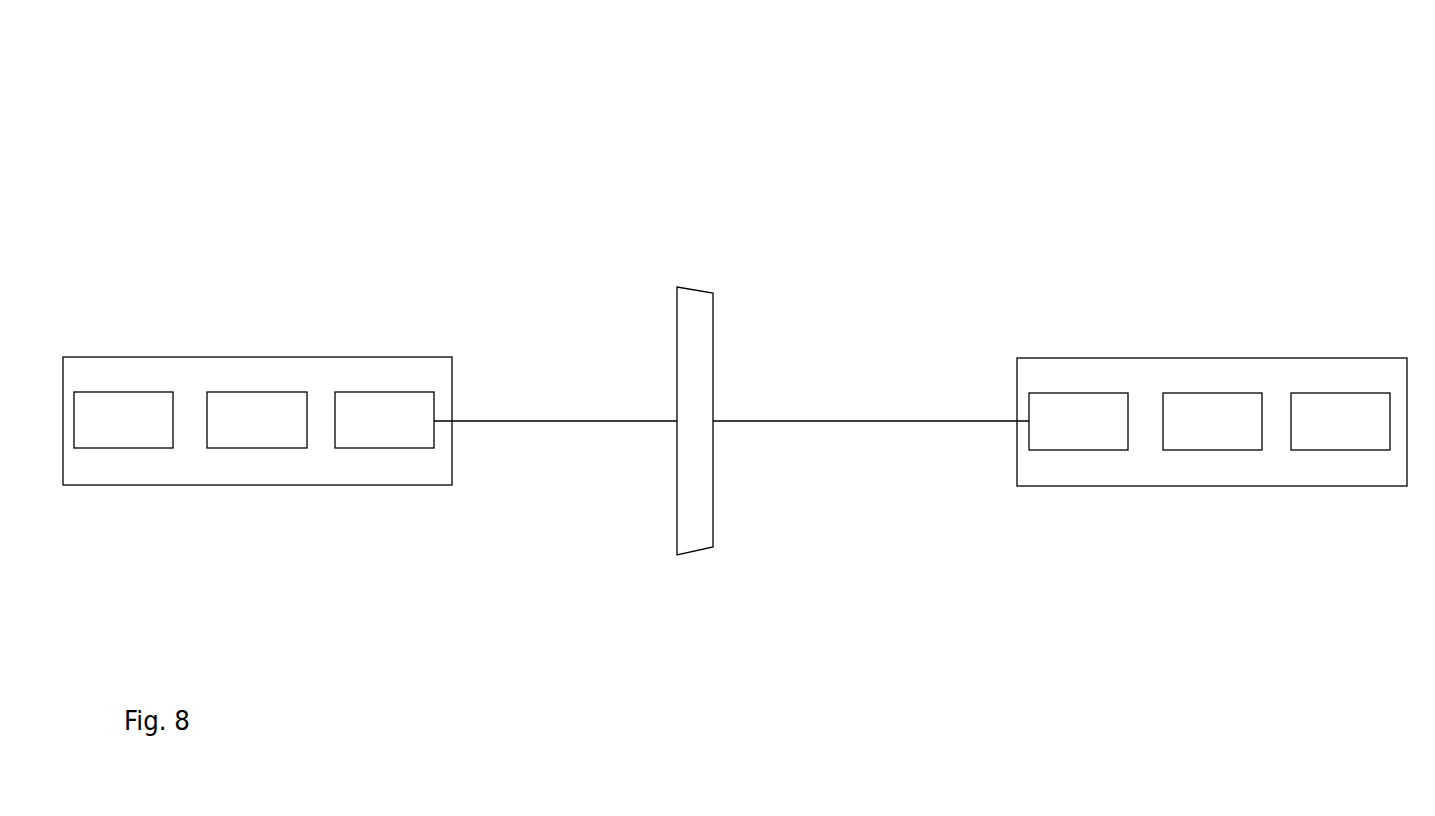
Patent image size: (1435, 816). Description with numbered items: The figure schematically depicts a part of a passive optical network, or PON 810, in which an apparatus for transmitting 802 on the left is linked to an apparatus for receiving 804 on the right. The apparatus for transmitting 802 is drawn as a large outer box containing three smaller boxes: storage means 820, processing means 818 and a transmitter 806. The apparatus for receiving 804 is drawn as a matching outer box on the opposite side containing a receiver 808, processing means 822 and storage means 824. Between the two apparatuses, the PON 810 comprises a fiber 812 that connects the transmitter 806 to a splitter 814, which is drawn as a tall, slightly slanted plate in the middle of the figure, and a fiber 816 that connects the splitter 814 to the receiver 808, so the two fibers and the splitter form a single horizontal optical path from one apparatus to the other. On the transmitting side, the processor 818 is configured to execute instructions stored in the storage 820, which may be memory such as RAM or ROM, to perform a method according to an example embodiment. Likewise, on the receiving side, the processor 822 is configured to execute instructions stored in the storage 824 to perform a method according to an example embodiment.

The PON 810 is at (470, 69).
The apparatus for transmitting 802 is at (277, 362).
The apparatus for receiving 804 is at (1233, 363).
The transmitter 806 is at (397, 397).
The receiver 808 is at (1092, 398).
The fiber 812 is at (548, 423).
The splitter 814 is at (698, 300).
The fiber 816 is at (862, 420).
The processing means 818 is at (257, 445).
The storage means 820 is at (137, 397).
The processing means 822 is at (1211, 447).
The storage means 824 is at (1353, 398).